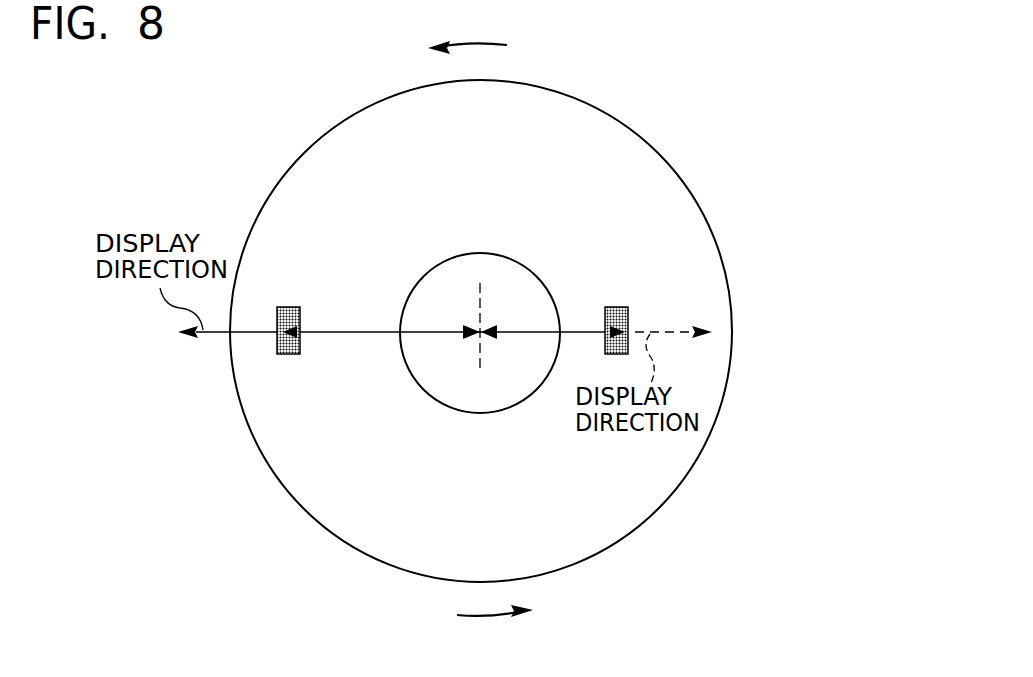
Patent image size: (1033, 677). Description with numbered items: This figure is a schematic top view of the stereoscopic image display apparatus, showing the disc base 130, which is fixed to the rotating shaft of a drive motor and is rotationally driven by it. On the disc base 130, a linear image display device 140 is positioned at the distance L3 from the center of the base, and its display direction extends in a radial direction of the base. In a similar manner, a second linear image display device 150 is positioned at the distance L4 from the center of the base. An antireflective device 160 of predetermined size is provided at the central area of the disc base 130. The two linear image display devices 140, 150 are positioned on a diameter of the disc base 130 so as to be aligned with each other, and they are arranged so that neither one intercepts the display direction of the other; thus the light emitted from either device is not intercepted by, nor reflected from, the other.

The disc base 130 is at (641, 137).
The linear image display device 140 is at (293, 305).
The linear image display device 150 is at (618, 305).
The antireflective device 160 is at (512, 258).
The distance L3 is at (376, 330).
The distance L4 is at (575, 330).